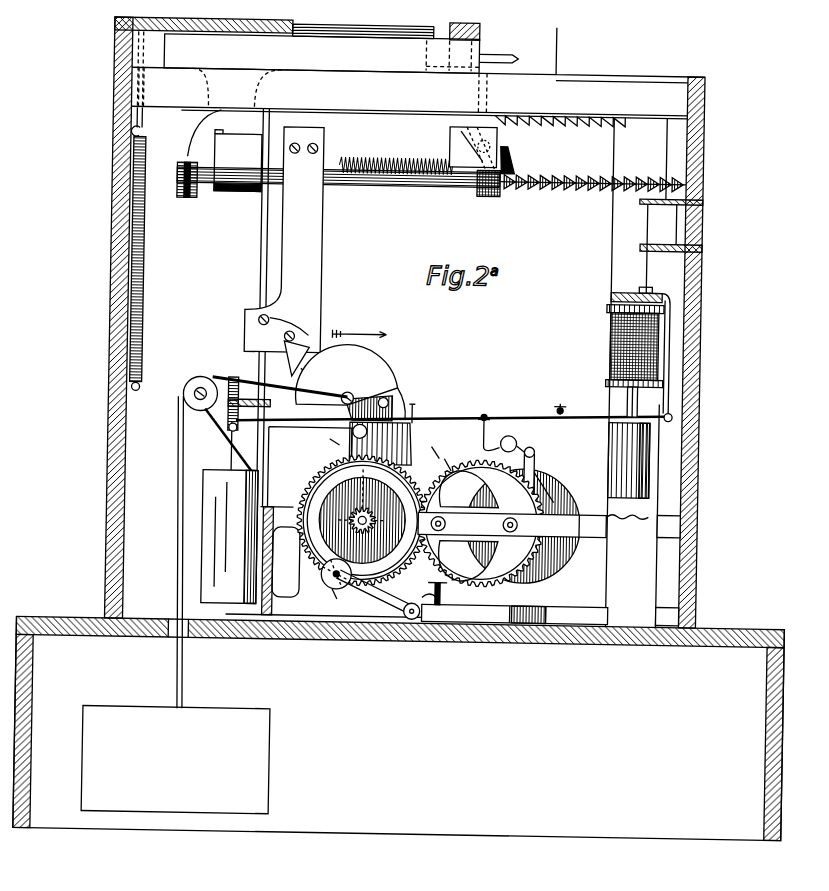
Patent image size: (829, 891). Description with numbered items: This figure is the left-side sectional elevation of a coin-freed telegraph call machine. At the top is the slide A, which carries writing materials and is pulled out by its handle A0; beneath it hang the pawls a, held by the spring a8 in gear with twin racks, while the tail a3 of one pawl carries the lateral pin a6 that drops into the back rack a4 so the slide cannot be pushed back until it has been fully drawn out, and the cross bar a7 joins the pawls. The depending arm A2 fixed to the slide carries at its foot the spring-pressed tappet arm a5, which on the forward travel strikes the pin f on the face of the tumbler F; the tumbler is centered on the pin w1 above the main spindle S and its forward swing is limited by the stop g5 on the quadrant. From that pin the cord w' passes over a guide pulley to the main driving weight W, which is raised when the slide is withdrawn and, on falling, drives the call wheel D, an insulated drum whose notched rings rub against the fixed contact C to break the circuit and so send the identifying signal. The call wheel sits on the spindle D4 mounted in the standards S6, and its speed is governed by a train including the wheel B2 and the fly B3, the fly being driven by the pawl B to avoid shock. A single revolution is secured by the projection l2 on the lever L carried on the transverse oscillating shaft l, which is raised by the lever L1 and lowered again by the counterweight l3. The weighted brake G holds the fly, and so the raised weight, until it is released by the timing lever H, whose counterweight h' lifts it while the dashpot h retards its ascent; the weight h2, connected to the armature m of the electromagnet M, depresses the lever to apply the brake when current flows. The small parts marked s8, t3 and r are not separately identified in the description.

The slide A is at (322, 53).
The handle A0 is at (512, 57).
The depending arm A2 is at (284, 239).
The pawl a is at (506, 172).
The tail of pawl a3 is at (302, 363).
The back rack a4 is at (560, 131).
The tappet arm a5 is at (593, 173).
The lateral pin a6 is at (463, 137).
The cross bar a7 is at (482, 145).
The spring a8 is at (396, 157).
The tumbler F is at (346, 382).
The pin f is at (302, 364).
The pin w1 is at (345, 391).
The stop g5 is at (407, 404).
The stop pin s8 is at (416, 413).
The main spindle S is at (380, 443).
The weight h2 is at (333, 436).
The timing lever H is at (439, 393).
The cord w' is at (170, 552).
The dashpot h is at (229, 537).
The main driving weight W is at (175, 760).
The weighted brake G is at (496, 441).
The pawl B is at (523, 515).
The fly B3 is at (527, 487).
The wheel of train B2 is at (481, 513).
The lever L1 is at (444, 456).
The pin t3 is at (431, 444).
The call wheel D is at (362, 520).
The spindle D4 is at (372, 522).
The roller r is at (351, 459).
The standards S6 is at (512, 524).
The counterweight l3 is at (327, 577).
The projection l2 is at (333, 600).
The oscillating shaft l is at (378, 594).
The lever L is at (514, 614).
The fixed contact C is at (435, 602).
The electric magnet M is at (609, 338).
The armature m is at (612, 398).
The counterweight h' is at (628, 471).